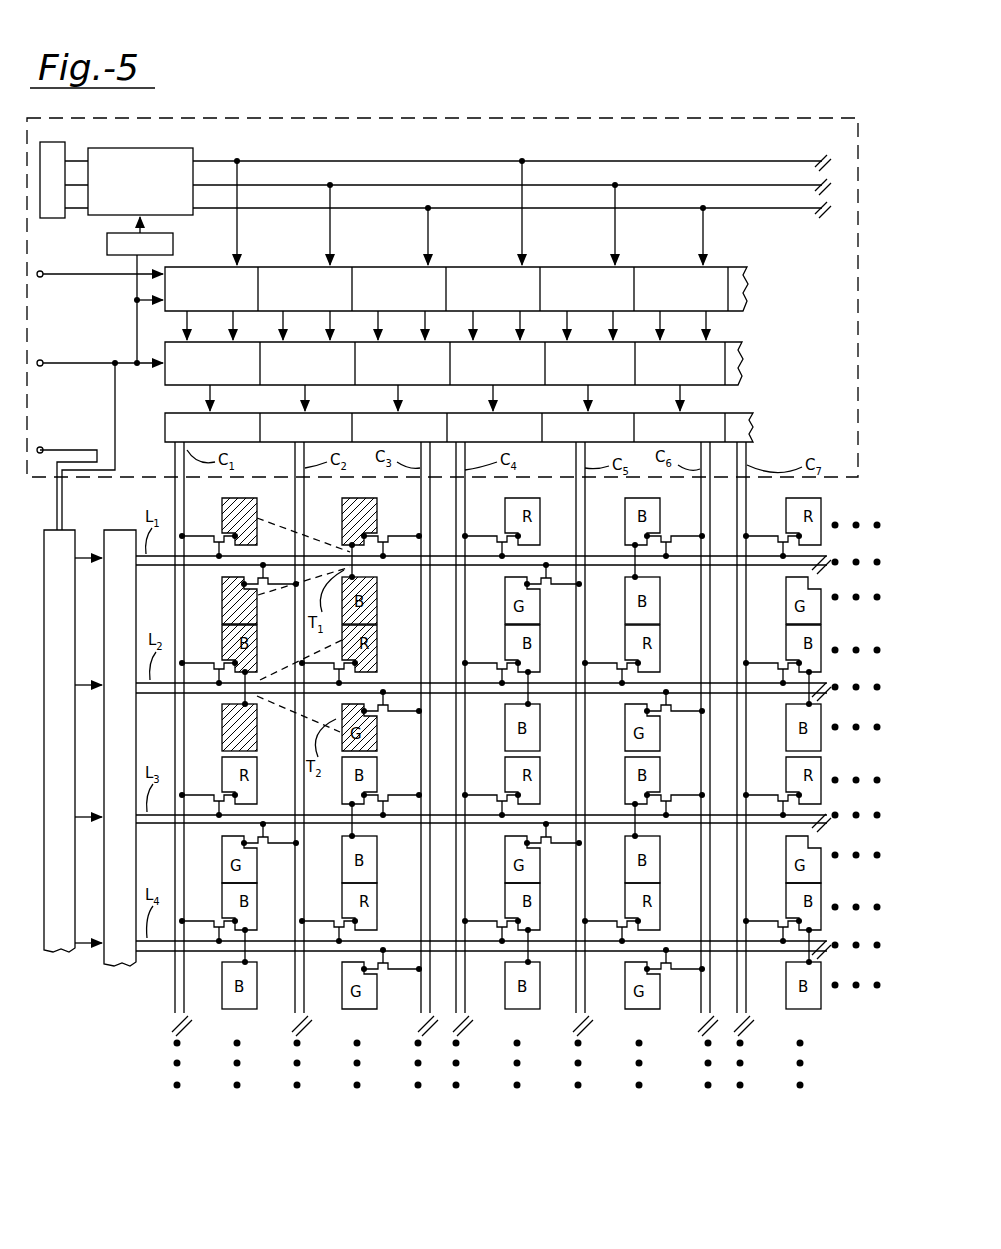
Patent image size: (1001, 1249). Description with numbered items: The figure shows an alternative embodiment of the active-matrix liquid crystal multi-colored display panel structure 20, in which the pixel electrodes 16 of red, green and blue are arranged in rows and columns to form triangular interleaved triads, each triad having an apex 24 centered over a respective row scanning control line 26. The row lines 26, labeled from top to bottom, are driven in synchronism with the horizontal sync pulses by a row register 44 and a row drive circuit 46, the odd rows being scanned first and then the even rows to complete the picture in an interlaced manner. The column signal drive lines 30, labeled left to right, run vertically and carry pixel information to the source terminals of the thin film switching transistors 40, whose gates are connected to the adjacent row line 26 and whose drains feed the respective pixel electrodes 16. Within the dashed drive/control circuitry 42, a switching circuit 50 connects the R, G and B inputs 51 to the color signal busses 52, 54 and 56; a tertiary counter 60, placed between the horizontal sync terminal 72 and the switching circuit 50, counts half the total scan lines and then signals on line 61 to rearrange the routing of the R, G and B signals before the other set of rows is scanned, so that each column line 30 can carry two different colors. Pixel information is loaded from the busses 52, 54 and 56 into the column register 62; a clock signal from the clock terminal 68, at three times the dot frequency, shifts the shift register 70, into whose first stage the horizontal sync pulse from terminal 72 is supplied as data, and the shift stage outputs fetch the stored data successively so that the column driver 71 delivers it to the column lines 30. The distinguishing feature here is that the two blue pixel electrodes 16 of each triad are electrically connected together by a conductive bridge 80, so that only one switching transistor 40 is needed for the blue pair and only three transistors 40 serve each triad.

The display panel structure 20 is at (582, 113).
The drive/control circuitry 42 is at (680, 118).
The inputs 51 is at (55, 142).
The switching circuit 50 is at (192, 148).
The color signal bus 52 is at (678, 161).
The color signal bus 54 is at (736, 185).
The color signal bus 56 is at (781, 208).
The tertiary counter 60 is at (173, 243).
The control signal line 61 is at (122, 223).
The shift register 70 is at (733, 267).
The clock terminal 68 is at (55, 280).
The column register 62 is at (745, 344).
The column driver 71 is at (750, 413).
The terminal 72 is at (45, 370).
The column signal drive line 30 is at (176, 456).
The row register 44 is at (66, 530).
The row drive circuit 46 is at (116, 529).
The row scanning control line 26 is at (172, 568).
The pixel electrode 16 is at (246, 496).
The apex 24 is at (352, 554).
The thin film switching transistor 40 is at (220, 554).
The conductive bridge 80 is at (245, 704).